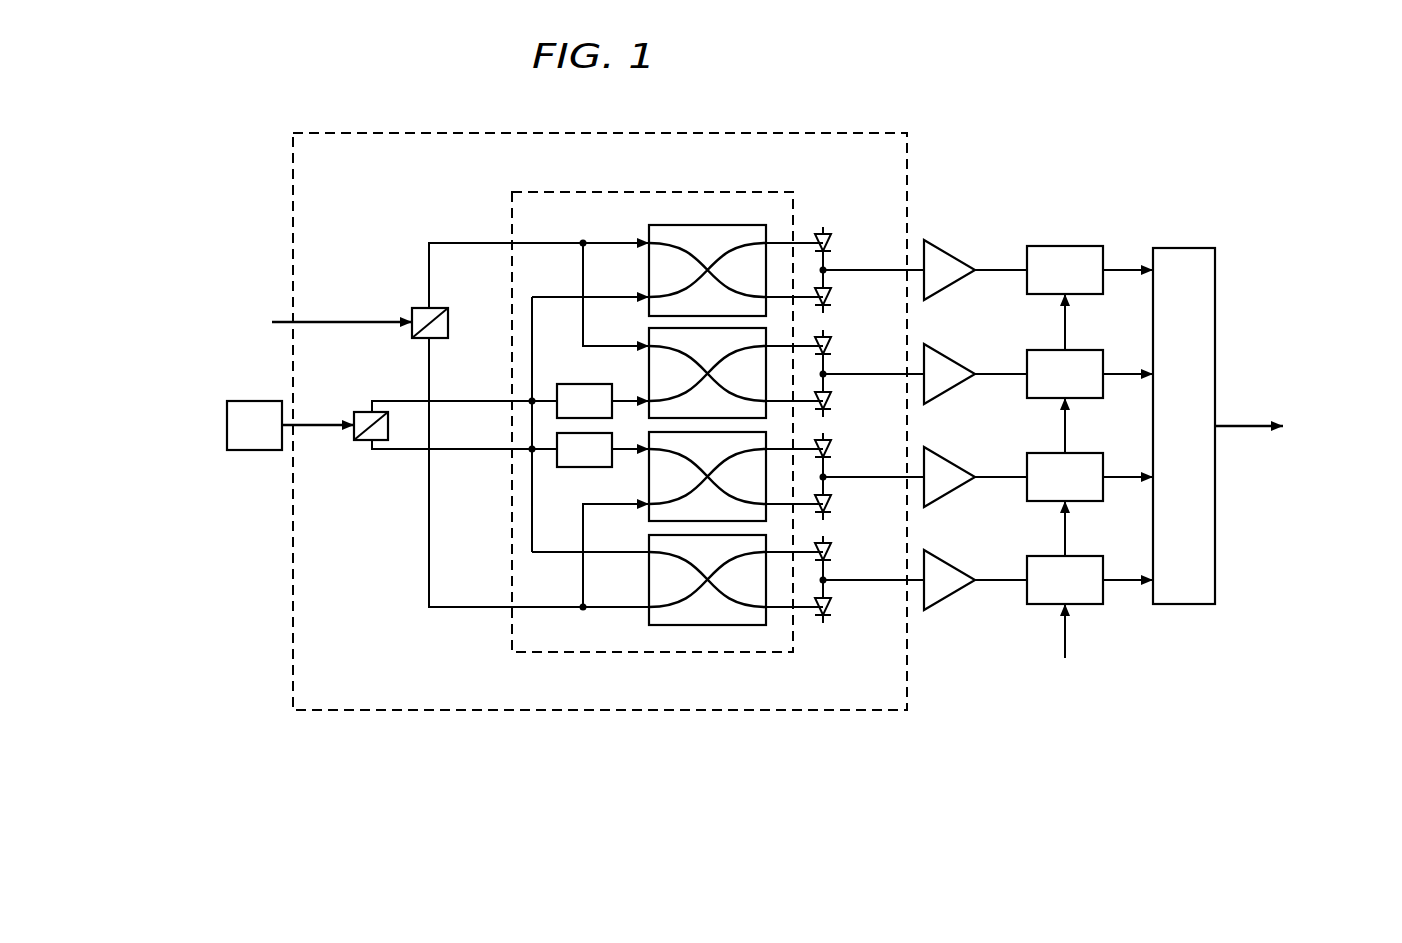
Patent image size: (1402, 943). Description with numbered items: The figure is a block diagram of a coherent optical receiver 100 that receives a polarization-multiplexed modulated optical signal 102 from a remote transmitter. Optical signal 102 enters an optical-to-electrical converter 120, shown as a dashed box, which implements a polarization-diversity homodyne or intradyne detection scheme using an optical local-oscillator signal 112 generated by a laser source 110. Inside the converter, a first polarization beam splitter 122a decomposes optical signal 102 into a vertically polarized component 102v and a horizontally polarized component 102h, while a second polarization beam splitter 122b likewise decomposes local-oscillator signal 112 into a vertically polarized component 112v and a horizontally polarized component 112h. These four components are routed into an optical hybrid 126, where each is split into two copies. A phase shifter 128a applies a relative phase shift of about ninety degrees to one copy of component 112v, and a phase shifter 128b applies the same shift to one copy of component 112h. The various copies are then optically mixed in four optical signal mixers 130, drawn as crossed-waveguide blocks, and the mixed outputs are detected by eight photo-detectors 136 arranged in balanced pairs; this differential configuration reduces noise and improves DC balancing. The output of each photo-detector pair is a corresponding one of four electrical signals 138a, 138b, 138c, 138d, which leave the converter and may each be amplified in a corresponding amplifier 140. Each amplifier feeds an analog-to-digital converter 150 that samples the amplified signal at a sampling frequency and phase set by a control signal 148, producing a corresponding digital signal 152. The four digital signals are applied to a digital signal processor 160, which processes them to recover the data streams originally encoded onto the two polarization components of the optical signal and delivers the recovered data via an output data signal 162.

The coherent optical receiver 100 is at (603, 101).
The optical-to-electrical converter 120 is at (292, 152).
The optical hybrid 126 is at (660, 192).
The polarization-multiplexed modulated optical signal 102 is at (310, 318).
The vertically polarized component 102v is at (433, 276).
The horizontally polarized component 102h is at (430, 362).
The polarization beam splitter 122a is at (410, 336).
The polarization beam splitter 122b is at (368, 444).
The laser source 110 is at (226, 425).
The optical local-oscillator signal 112 is at (320, 432).
The vertically polarized component 112v is at (490, 403).
The horizontally polarized component 112h is at (468, 452).
The phase shifter 128a is at (573, 384).
The phase shifter 128b is at (573, 467).
The optical signal mixer 130 is at (722, 252).
The photo-detectors 136 is at (823, 210).
The electrical signal 138a is at (866, 268).
The electrical signal 138b is at (866, 371).
The electrical signal 138c is at (866, 474).
The electrical signal 138d is at (866, 576).
The amplifier 140 is at (943, 250).
The analog-to-digital converter 150 is at (1048, 296).
The digital signal 152 is at (1124, 268).
The control signal 148 is at (1067, 644).
The digital signal processor 160 is at (1171, 248).
The output data signal 162 is at (1244, 421).